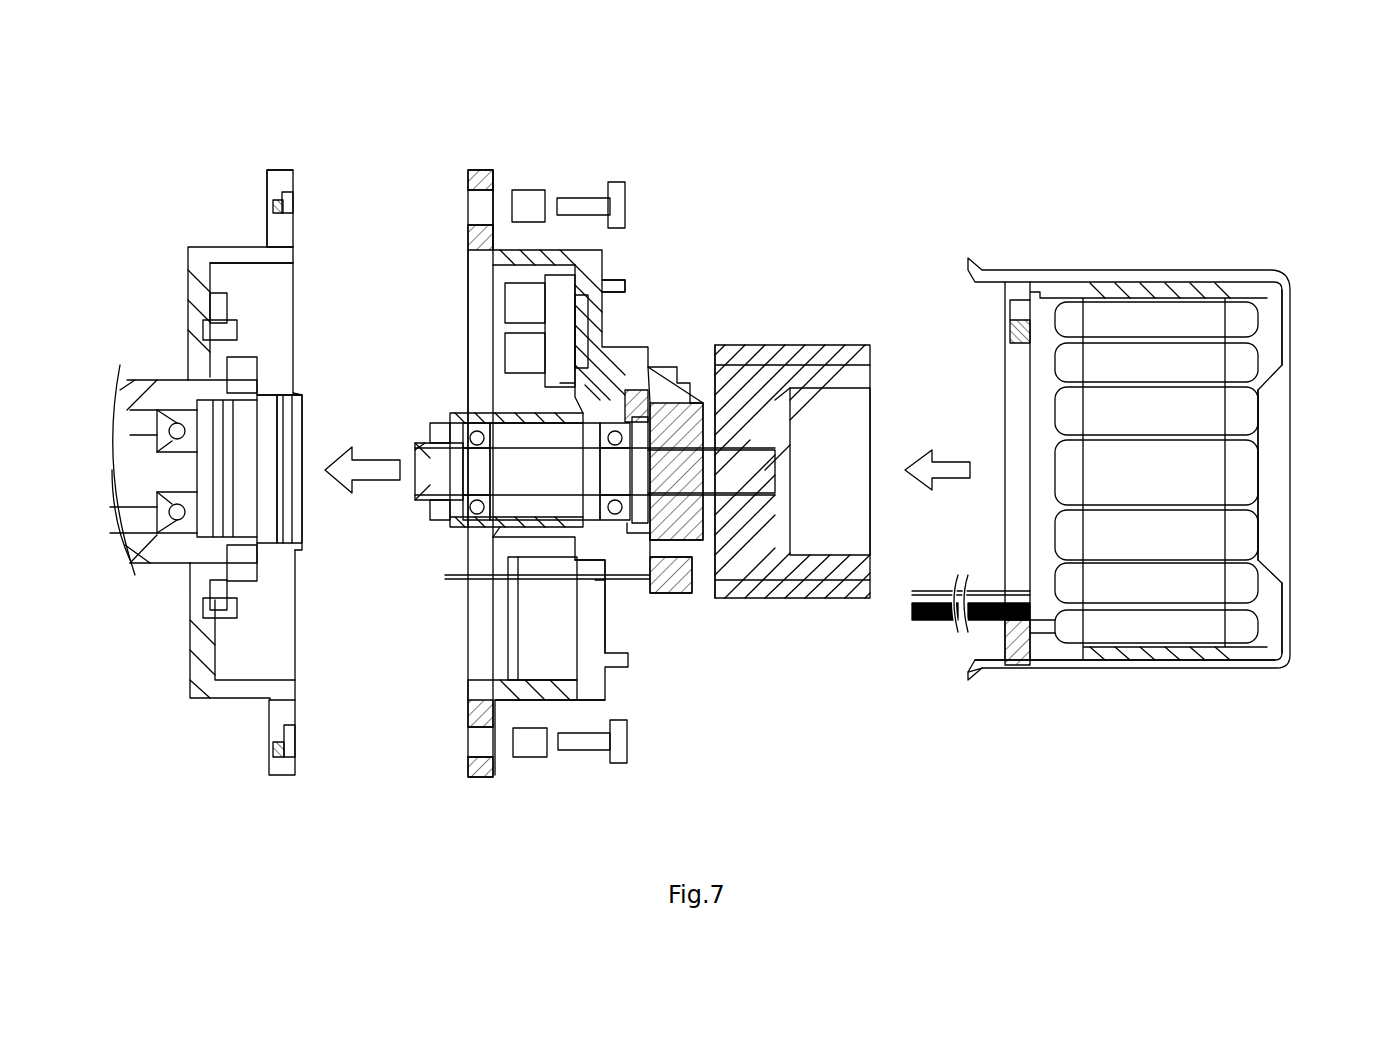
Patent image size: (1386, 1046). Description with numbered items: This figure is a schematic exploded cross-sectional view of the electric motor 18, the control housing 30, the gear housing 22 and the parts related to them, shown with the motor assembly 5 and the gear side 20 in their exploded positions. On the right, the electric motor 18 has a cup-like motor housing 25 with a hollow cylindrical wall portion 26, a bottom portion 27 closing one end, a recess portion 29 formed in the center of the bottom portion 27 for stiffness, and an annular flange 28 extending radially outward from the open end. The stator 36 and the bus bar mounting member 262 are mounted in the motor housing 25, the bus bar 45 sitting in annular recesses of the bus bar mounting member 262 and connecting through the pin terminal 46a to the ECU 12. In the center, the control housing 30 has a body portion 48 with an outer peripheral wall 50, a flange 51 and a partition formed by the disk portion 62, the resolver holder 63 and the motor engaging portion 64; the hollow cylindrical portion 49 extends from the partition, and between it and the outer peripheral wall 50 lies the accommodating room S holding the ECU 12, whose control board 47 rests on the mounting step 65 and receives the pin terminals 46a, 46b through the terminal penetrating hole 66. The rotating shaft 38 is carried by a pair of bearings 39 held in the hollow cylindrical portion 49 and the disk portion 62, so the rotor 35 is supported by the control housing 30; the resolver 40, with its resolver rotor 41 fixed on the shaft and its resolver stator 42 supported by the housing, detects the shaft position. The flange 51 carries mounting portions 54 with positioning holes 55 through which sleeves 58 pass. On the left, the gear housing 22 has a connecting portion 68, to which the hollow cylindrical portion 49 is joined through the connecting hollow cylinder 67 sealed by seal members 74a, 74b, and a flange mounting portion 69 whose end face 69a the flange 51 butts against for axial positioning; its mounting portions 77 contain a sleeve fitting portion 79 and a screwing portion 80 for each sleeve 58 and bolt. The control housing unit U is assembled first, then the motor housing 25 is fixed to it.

The motor 5 is at (1206, 210).
The ECU 12 is at (496, 635).
The electric motor 18 is at (1262, 250).
The hub 20 is at (125, 472).
The gear housing 22 is at (133, 580).
The motor housing 25 is at (1302, 315).
The wall portion 26 is at (1170, 668).
The bottom portion 27 is at (1292, 606).
The annular flange 28 is at (978, 682).
The recess portion 29 is at (1284, 476).
The control housing 30 is at (705, 290).
The rotor 35 is at (881, 378).
The stator 36 is at (1104, 272).
The rotating shaft 38 is at (776, 462).
The bearings 39 is at (485, 450).
The resolver 40 is at (700, 366).
The resolver rotor 41 is at (658, 440).
The resolver stator 42 is at (682, 594).
The bus bar 45 is at (1020, 640).
The pin terminal 46a is at (924, 640).
The pin terminal 46b is at (445, 574).
The control board 47 is at (510, 598).
The body portion 48 is at (457, 182).
The hollow cylindrical portion 49 is at (505, 413).
The outer peripheral wall 50 is at (537, 697).
The flange 51 is at (457, 250).
The mounting portions 54 is at (484, 170).
The positioning hole 55 is at (478, 210).
The sleeve 58 is at (528, 190).
The disk portion 62 is at (600, 318).
The resolver holder 63 is at (637, 390).
The motor engaging portion 64 is at (622, 280).
The mounting step 65 is at (530, 655).
The terminal penetrating hole 66 is at (595, 628).
The connecting hollow cylinder 67 is at (295, 370).
The connecting portion 68 is at (188, 282).
The flange mounting portion 69 is at (258, 180).
The end face 69a is at (300, 292).
The seal member 74a is at (292, 432).
The seal member 74b is at (215, 596).
The mounting portions 77 is at (282, 170).
The sleeve fitting portion 79 is at (294, 212).
The screwing portion 80 is at (273, 208).
The bus bar mounting member 262 is at (1010, 318).
The accommodating room S is at (480, 358).
The control housing unit U is at (812, 185).